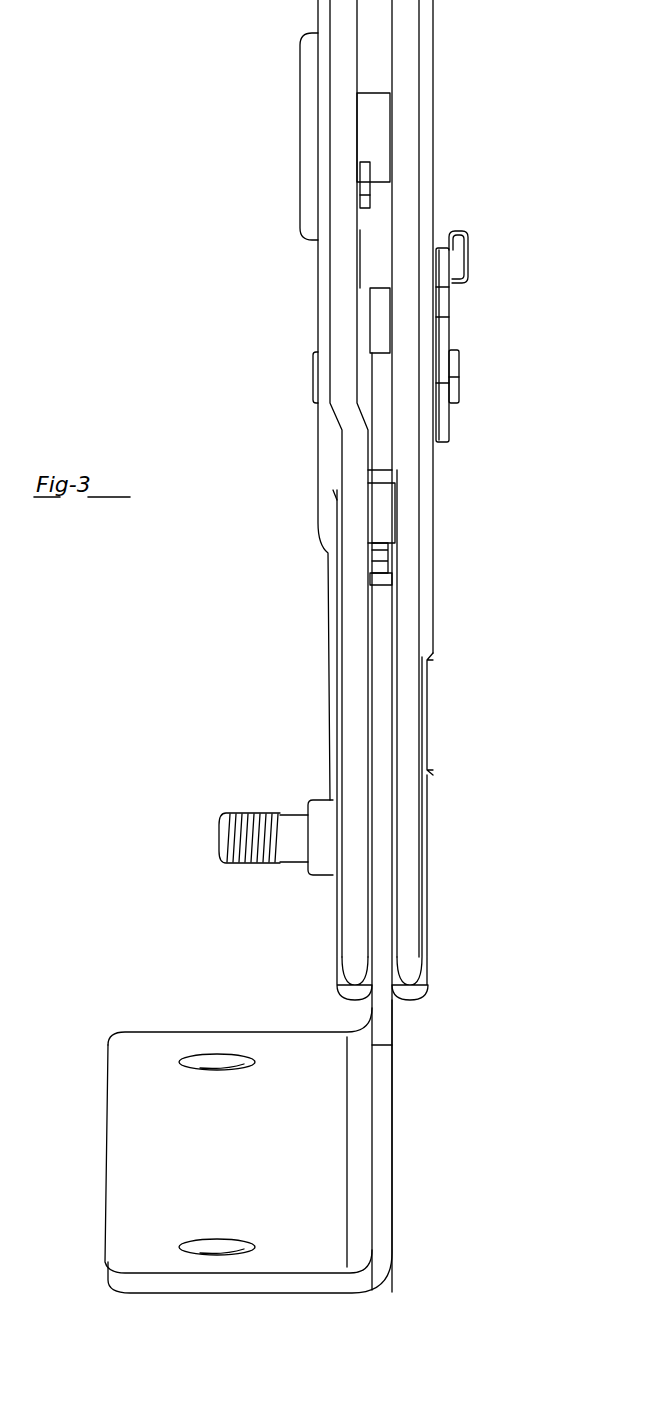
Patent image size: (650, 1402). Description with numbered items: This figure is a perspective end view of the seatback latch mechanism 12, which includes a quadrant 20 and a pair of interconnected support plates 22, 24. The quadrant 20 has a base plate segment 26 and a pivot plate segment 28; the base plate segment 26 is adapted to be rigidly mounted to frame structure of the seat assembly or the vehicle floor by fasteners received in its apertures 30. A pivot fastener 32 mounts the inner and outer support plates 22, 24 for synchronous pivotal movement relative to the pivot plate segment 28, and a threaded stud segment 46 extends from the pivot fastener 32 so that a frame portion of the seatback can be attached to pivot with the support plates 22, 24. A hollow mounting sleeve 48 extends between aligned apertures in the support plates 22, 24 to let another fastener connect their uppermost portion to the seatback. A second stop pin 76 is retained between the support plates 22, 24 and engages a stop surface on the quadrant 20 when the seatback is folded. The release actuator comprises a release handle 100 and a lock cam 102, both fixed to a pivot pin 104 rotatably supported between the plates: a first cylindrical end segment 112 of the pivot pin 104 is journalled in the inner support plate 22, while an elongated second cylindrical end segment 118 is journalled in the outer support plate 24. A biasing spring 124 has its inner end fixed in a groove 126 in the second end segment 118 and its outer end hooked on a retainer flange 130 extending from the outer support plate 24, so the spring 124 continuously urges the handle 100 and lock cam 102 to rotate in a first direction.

The seatback latch mechanism 12 is at (466, 851).
The quadrant 20 is at (394, 1137).
The inner support plate 22 is at (335, 948).
The outer support plate 24 is at (430, 927).
The base plate segment 26 is at (242, 1163).
The pivot plate segment 28 is at (380, 1018).
The apertures 30 is at (235, 1066).
The pivot fastener 32 is at (292, 815).
The threaded stud segment 46 is at (250, 863).
The hollow mounting sleeve 48 is at (371, 110).
The second stop pin 76 is at (377, 508).
The release handle 100 is at (369, 230).
The lock cam 102 is at (381, 290).
The pivot pin 104 is at (310, 388).
The first cylindrical end segment 112 is at (313, 363).
The second cylindrical end segment 118 is at (459, 362).
The biasing spring 124 is at (450, 332).
The groove 126 is at (459, 378).
The retainer flange 130 is at (458, 250).